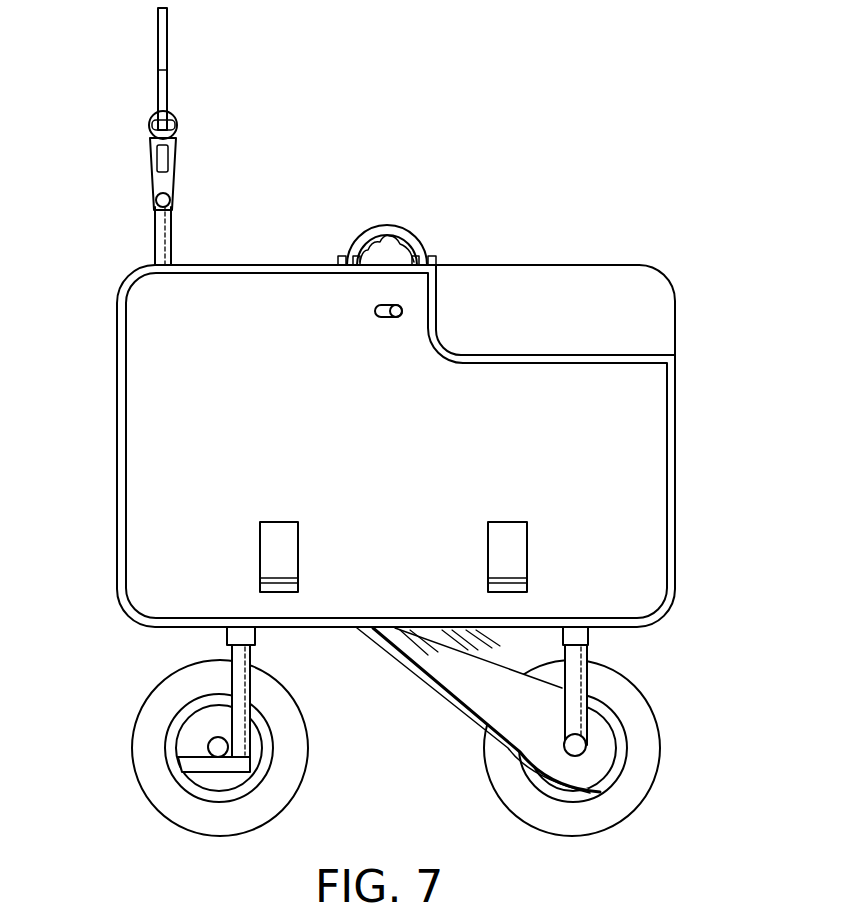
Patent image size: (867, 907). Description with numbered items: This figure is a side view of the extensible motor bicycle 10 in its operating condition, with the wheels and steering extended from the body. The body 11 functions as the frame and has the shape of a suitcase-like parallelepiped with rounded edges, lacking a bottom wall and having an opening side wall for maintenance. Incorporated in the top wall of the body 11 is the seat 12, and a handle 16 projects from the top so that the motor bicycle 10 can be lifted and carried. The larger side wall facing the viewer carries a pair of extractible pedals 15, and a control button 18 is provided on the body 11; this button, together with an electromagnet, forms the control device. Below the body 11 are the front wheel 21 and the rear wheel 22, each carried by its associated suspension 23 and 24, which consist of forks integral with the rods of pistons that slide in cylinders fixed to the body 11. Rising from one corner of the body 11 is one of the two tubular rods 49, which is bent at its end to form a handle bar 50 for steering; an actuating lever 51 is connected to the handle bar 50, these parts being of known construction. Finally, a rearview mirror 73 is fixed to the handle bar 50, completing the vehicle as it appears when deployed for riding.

The extensible motor bicycle 10 is at (318, 183).
The body 11 is at (115, 421).
The seat 12 is at (615, 282).
The extractible pedals 15 is at (274, 537).
The handle 16 is at (423, 244).
The control button 18 is at (402, 311).
The front wheel 21 is at (147, 763).
The rear wheel 22 is at (650, 773).
The front suspension 23 is at (260, 642).
The rear suspension 24 is at (594, 642).
The tubular rods 49 is at (170, 238).
The handle bars 50 is at (177, 130).
The actuating levers 51 is at (168, 180).
The rearview mirror 73 is at (167, 22).